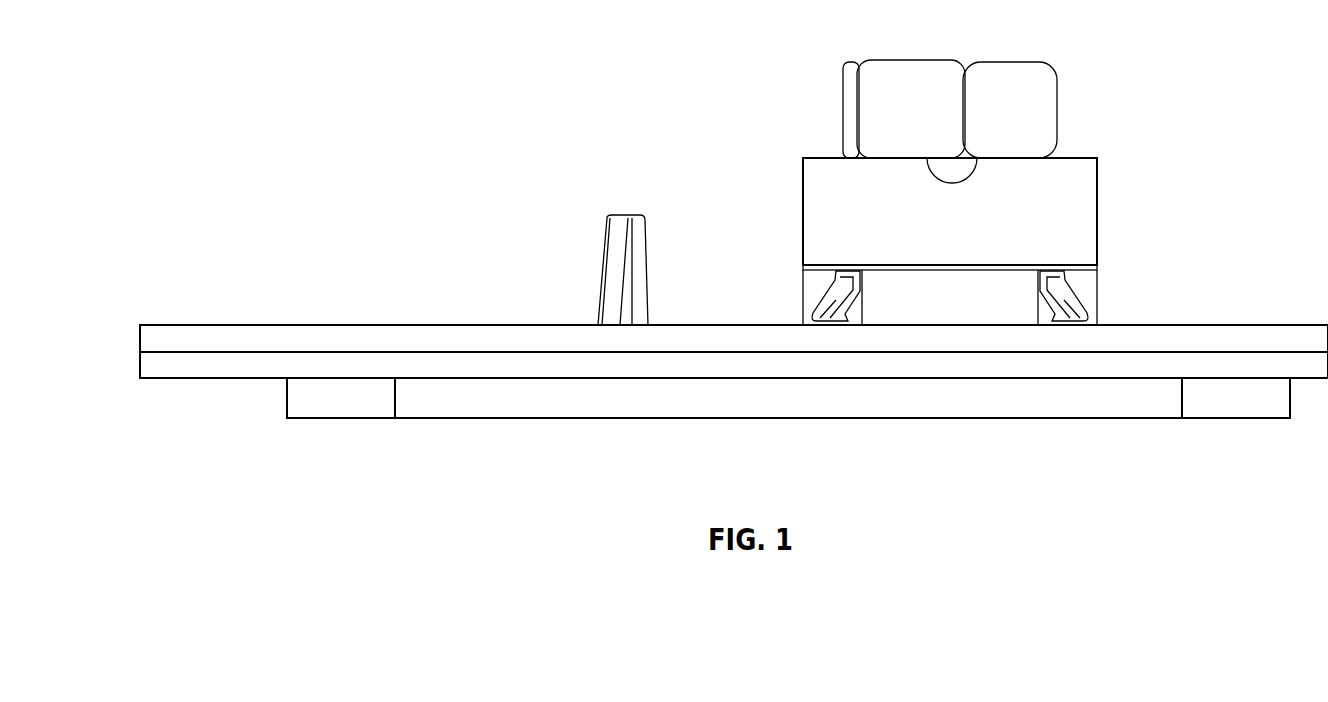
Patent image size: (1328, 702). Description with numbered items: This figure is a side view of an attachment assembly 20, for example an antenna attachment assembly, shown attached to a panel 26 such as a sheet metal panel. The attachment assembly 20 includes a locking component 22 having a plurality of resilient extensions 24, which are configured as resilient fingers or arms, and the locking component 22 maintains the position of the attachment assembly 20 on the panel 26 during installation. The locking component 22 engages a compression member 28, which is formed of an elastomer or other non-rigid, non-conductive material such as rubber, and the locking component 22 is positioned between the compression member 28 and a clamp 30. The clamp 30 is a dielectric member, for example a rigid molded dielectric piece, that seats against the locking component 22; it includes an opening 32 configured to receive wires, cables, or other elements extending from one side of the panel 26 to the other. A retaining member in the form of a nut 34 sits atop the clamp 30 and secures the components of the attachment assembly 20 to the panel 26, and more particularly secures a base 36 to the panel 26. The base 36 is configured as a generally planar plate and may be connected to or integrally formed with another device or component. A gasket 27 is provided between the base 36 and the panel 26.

The attachment assembly 20 is at (960, 192).
The locking component 22 is at (1097, 267).
The resilient extensions 24 is at (1072, 302).
The panel 26 is at (308, 340).
The gasket 27 is at (140, 367).
The compression member 28 is at (803, 298).
The clamp 30 is at (803, 212).
The opening 32 is at (947, 177).
The nut 34 is at (1037, 113).
The base 36 is at (448, 405).